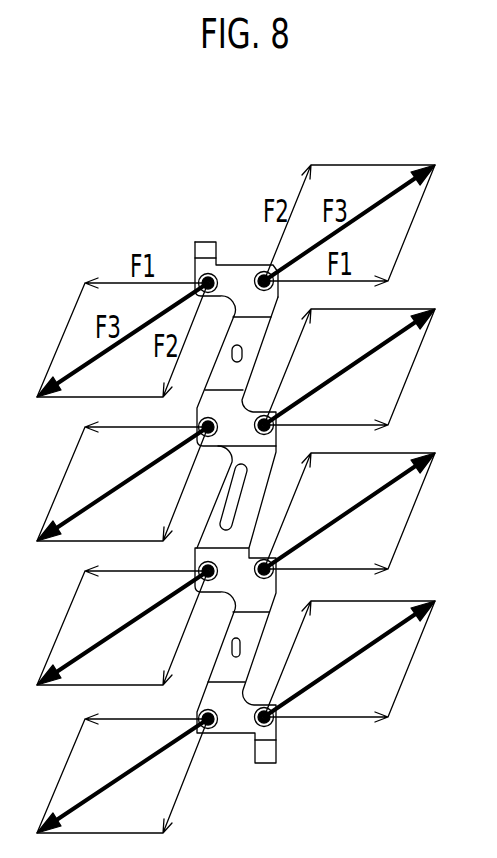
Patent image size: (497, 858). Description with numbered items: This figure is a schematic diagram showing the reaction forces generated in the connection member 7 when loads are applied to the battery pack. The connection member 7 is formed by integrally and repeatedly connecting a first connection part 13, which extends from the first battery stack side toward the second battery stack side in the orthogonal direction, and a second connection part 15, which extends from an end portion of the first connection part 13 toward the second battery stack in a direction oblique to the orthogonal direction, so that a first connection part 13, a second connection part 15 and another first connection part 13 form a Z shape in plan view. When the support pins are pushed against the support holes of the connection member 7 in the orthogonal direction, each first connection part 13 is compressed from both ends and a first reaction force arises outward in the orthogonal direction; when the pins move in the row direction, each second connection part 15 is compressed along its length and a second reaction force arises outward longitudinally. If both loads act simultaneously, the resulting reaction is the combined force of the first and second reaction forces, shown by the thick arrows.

The connection member 7 is at (239, 752).
The first connection part 13 is at (244, 285).
The second connection part 15 is at (236, 368).